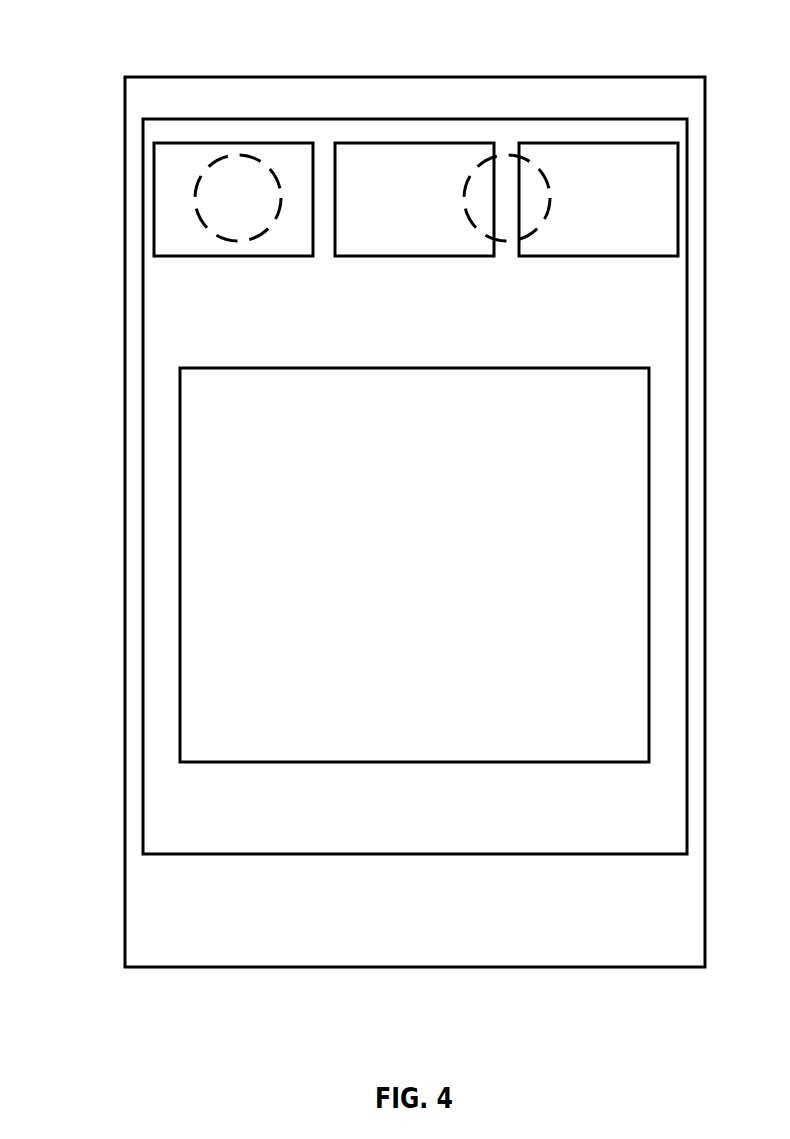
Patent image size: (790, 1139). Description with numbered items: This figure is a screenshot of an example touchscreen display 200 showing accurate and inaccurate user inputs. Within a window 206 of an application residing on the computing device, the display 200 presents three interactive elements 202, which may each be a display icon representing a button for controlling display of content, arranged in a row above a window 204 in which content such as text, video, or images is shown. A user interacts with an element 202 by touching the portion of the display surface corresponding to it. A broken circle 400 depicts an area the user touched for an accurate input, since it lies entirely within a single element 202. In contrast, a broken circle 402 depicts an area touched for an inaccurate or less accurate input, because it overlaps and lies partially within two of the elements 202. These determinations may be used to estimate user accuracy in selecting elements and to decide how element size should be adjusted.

The touchscreen display 200 is at (124, 78).
The interactive elements 202 is at (415, 256).
The window 204 is at (314, 368).
The window of an application 206 is at (520, 119).
The broken circle 400 is at (238, 158).
The broken circle 402 is at (475, 170).